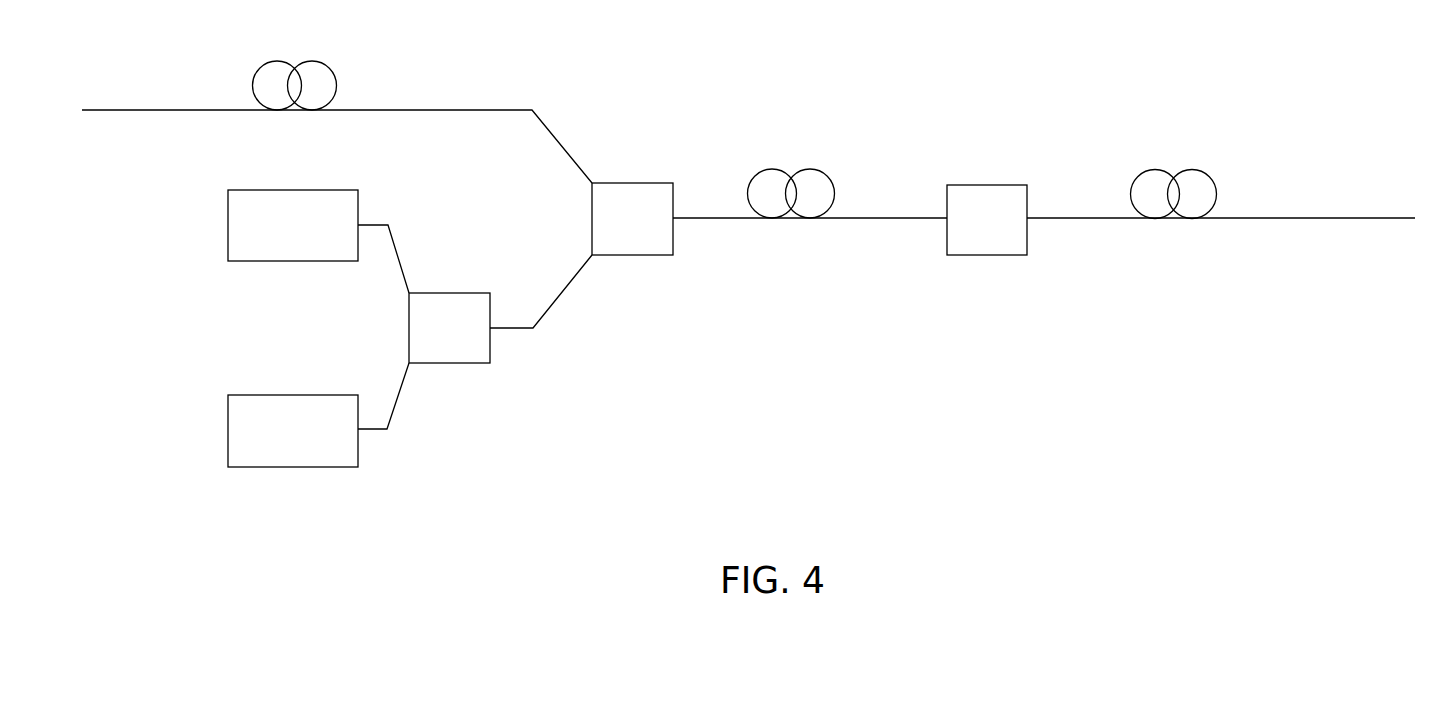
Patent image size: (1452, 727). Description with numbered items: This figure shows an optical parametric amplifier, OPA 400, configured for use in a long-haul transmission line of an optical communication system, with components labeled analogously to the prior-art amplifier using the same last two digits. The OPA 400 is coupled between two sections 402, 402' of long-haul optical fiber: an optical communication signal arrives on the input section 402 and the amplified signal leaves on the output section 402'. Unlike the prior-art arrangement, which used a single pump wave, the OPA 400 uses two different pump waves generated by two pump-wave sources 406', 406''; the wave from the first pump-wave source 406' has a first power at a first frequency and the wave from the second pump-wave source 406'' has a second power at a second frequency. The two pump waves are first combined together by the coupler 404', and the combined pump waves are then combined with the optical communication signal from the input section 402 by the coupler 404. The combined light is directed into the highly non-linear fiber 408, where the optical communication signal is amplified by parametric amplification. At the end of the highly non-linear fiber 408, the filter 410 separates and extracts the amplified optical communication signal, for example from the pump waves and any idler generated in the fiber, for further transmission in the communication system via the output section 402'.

The OPA 400 is at (843, 350).
The section of long-haul optical fiber 402 is at (337, 114).
The section of long-haul optical fiber 402' is at (1221, 168).
The coupler 404 is at (632, 179).
The coupler 404' is at (500, 295).
The pump-wave source 406' is at (272, 241).
The pump-wave source 406'' is at (271, 415).
The highly non-linear fiber 408 is at (862, 218).
The filter 410 is at (963, 185).